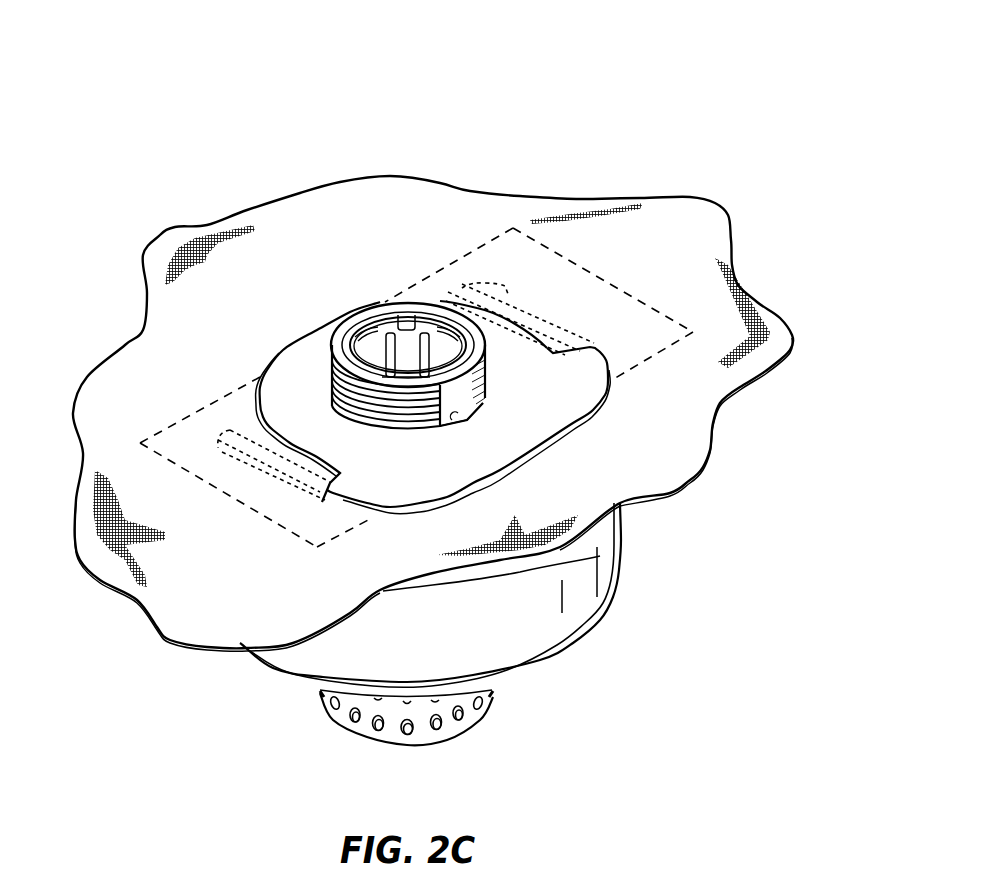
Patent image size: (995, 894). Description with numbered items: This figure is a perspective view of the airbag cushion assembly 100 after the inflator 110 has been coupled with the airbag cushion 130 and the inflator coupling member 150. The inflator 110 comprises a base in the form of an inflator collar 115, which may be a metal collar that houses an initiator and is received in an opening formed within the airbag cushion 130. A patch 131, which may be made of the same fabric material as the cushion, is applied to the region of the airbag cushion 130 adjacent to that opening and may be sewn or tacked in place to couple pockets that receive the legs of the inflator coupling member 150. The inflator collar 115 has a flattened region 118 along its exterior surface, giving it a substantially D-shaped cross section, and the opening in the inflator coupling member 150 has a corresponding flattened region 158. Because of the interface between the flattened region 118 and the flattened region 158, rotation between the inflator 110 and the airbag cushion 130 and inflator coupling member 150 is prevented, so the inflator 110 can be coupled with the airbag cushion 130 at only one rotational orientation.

The airbag cushion assembly 100 is at (673, 115).
The inflator 110 is at (582, 595).
The inflator collar 115 is at (328, 341).
The flattened region 118 is at (463, 401).
The airbag cushion 130 is at (192, 614).
The patch 131 is at (448, 263).
The inflator coupling member 150 is at (571, 380).
The flattened region 158 is at (462, 410).